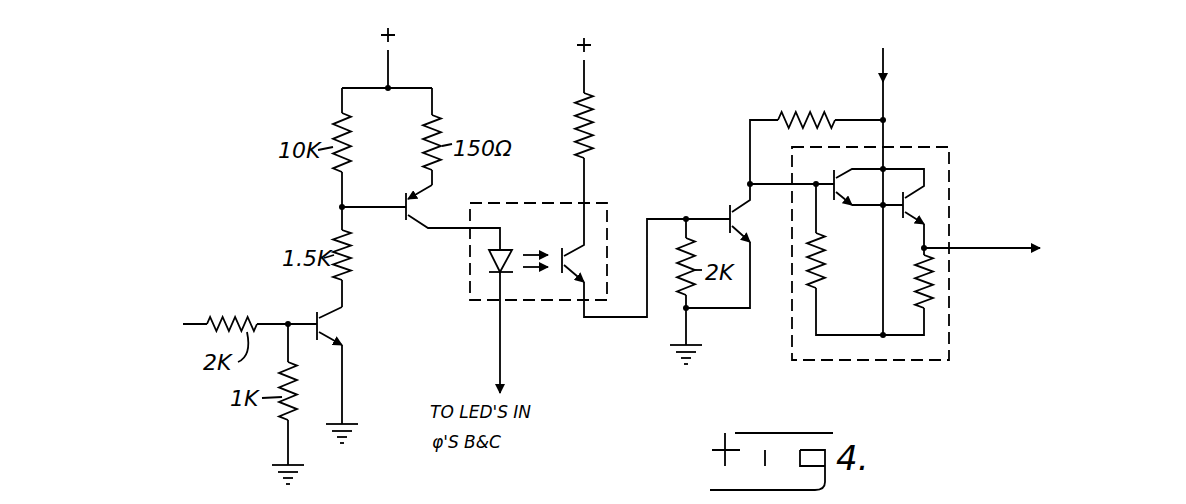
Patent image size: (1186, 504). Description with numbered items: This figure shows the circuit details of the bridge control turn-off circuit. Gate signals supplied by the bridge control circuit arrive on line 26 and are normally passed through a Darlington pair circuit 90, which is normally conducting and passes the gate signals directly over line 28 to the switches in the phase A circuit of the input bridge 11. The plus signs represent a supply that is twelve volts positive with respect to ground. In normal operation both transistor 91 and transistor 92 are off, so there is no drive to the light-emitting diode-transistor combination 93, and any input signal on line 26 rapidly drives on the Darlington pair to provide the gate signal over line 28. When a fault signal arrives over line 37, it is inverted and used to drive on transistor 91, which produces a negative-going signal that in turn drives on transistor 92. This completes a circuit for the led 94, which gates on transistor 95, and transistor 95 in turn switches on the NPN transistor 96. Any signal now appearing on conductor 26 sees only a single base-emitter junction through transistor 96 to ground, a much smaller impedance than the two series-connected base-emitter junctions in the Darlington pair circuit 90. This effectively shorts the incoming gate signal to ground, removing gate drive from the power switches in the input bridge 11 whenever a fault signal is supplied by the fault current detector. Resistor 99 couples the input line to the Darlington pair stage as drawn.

The line 37 is at (194, 323).
The transistor 91 is at (317, 313).
The transistor 92 is at (405, 218).
The light-emitting diode-transistor combination 93 is at (527, 300).
The led 94 is at (490, 258).
The transistor 95 is at (571, 247).
The NPN transistor 96 is at (728, 211).
The resistor 99 is at (800, 112).
The line 26 is at (886, 102).
The Darlington pair circuit 90 is at (928, 147).
The line 28 is at (921, 258).
The input bridge 11 is at (1062, 285).